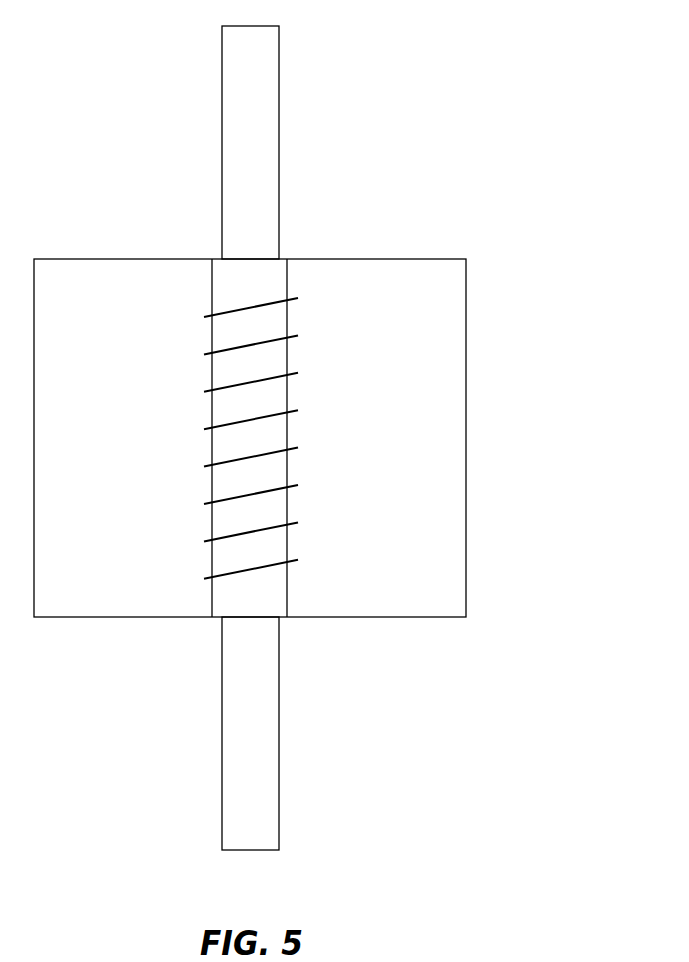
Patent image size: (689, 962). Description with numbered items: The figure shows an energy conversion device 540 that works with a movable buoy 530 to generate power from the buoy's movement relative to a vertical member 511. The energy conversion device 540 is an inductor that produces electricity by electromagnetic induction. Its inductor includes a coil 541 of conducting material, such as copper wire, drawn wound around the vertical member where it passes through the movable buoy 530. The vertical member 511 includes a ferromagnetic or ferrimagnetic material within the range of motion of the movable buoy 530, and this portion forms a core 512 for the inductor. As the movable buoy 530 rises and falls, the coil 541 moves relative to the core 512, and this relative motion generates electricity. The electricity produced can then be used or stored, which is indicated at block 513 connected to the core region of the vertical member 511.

The vertical member 511 is at (279, 118).
The core 512 is at (279, 243).
The block 513 is at (212, 277).
The movable buoy 530 is at (466, 346).
The energy conversion device 540 is at (305, 250).
The coil 541 is at (288, 370).